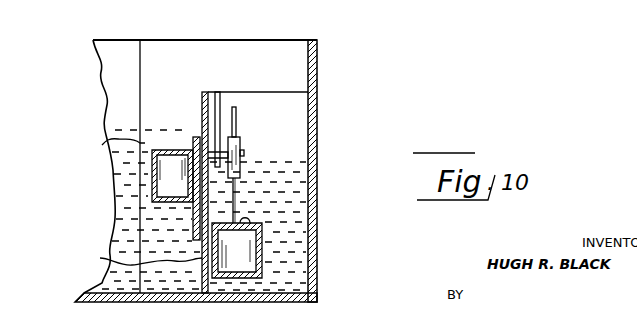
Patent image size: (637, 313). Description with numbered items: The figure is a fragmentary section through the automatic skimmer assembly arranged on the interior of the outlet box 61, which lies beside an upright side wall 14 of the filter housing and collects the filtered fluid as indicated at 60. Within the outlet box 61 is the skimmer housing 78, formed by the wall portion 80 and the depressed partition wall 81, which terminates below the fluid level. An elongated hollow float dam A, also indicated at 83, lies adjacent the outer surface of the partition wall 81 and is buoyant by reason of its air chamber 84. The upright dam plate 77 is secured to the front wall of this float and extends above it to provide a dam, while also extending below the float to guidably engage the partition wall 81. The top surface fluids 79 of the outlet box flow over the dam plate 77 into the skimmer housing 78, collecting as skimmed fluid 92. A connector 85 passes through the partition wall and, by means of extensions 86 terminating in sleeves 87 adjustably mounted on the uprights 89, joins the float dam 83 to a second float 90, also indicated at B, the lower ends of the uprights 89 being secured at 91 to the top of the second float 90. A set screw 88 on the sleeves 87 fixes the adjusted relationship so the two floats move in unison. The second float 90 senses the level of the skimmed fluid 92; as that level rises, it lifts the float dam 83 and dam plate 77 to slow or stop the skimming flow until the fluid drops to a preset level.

The side wall 14 is at (84, 293).
The collected fluid 60 is at (104, 144).
The outlet box 61 is at (318, 53).
The dam plate 77 is at (196, 137).
The skimmer housing 78 is at (292, 92).
The top surface fluids 79 is at (177, 130).
The wall portion 80 is at (205, 92).
The partition wall 81 is at (139, 257).
The float dam 83 is at (157, 193).
The air chamber 84 is at (160, 172).
The connector 85 is at (221, 145).
The extensions 86 is at (216, 167).
The sleeves 87 is at (243, 140).
The set screw 88 is at (245, 152).
The uprights 89 is at (238, 194).
The second float 90 is at (262, 263).
The securing point 91 is at (252, 230).
The skimmed fluid 92 is at (287, 160).